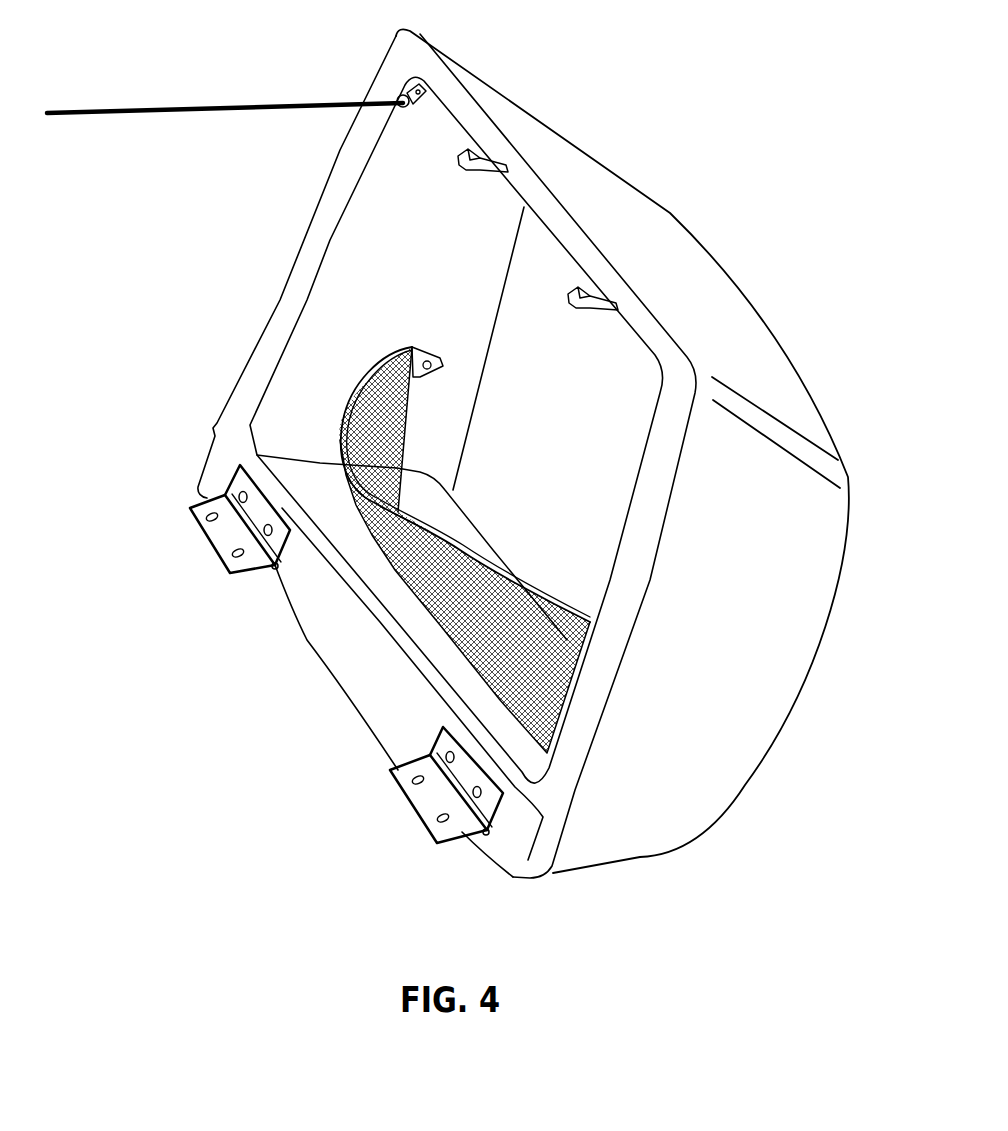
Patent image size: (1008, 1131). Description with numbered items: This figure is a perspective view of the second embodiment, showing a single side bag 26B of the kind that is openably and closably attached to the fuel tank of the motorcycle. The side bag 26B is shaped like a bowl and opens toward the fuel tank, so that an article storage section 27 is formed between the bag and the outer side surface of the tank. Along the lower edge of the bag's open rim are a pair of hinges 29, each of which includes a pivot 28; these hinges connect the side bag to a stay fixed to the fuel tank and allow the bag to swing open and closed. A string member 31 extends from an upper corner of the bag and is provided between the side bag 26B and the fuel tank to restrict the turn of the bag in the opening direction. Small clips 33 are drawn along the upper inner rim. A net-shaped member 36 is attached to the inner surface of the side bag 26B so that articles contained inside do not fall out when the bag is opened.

The side bag 26B is at (792, 652).
The article storage section 27 is at (565, 493).
The pivot 28 is at (275, 570).
The hinge 29 is at (220, 533).
The string member 31 is at (202, 106).
The clip 33 is at (480, 168).
The net-shaped member 36 is at (427, 570).